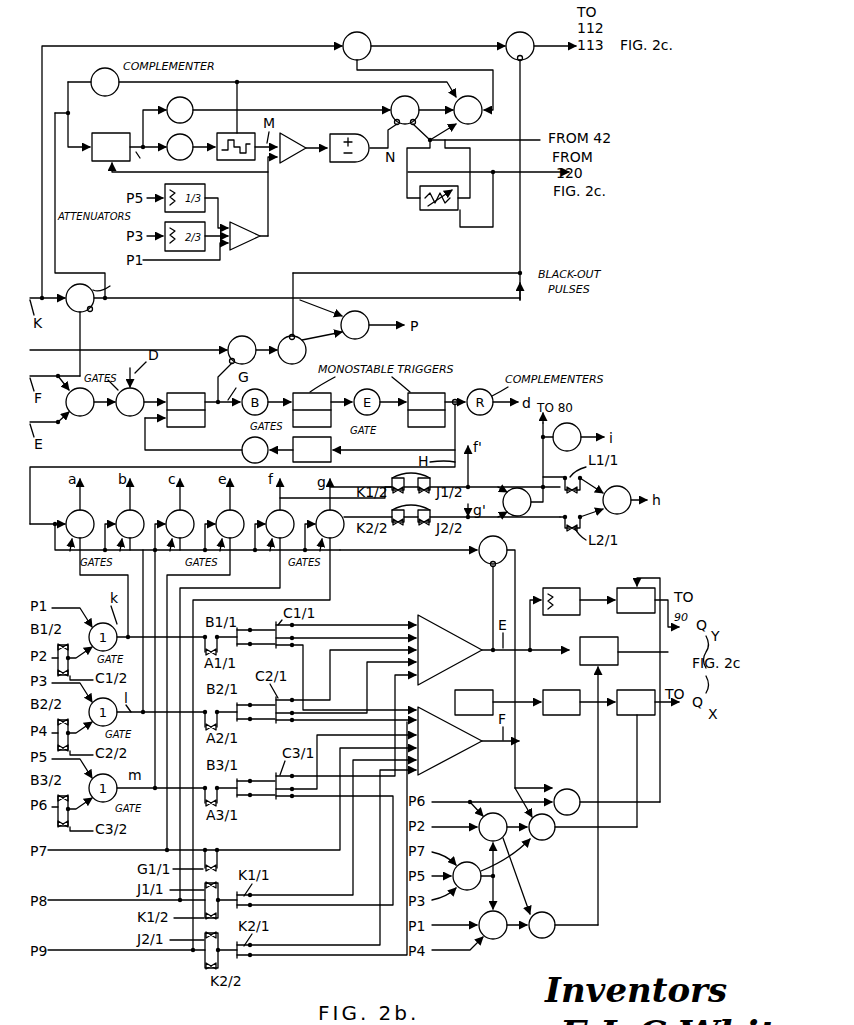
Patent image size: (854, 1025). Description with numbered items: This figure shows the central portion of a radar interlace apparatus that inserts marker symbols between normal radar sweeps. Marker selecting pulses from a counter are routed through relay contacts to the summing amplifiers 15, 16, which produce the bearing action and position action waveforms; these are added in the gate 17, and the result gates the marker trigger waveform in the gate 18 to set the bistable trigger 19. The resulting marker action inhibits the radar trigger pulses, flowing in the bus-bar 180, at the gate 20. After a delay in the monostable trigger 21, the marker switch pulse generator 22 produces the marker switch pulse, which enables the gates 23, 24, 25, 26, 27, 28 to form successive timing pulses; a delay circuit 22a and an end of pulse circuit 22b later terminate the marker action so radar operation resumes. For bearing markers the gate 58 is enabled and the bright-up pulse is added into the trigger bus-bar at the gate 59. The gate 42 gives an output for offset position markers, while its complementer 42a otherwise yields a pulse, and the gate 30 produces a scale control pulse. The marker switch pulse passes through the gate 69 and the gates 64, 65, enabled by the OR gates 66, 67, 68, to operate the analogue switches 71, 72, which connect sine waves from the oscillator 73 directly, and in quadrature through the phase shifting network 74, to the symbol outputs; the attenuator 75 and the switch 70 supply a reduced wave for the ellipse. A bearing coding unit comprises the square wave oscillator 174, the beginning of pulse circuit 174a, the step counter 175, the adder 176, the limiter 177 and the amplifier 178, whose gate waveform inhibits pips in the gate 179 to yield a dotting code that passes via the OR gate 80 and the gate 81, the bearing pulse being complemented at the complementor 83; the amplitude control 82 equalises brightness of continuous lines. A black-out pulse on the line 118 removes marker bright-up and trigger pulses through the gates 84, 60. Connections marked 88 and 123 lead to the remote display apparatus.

The complementor 83 is at (108, 68).
The gate 81 is at (373, 37).
The gate 84 is at (532, 40).
The gate 179 is at (405, 96).
The OR gate 80 is at (470, 96).
The square wave oscillator 174 is at (120, 143).
The beginning of pulse circuit 174a is at (183, 123).
The step counter 175 is at (243, 131).
The adder 176 is at (295, 131).
The limiter 177 is at (342, 131).
The amplifier 178 is at (236, 228).
The amplitude control 82 is at (418, 203).
The line 118 is at (537, 294).
The gate 58 is at (103, 297).
The bus-bar 180 is at (94, 351).
The gate 20 is at (242, 341).
The gate 60 is at (313, 341).
The gate 59 is at (355, 315).
The gate 17 is at (77, 417).
The gate 18 is at (124, 417).
The bistable trigger 19 is at (176, 414).
The monostable trigger 21 is at (312, 399).
The marker switch pulse generator 22 is at (426, 399).
The delay circuit 22a is at (333, 449).
The end of pulse circuit 22b is at (242, 445).
The gate 42 is at (519, 488).
The complementer 42a is at (578, 428).
The gate 30 is at (632, 507).
The gate 23 is at (67, 514).
The gate 24 is at (117, 514).
The gate 25 is at (167, 514).
The gate 26 is at (217, 514).
The gate 27 is at (267, 514).
The gate 28 is at (342, 538).
The gate 69 is at (481, 557).
The summing amplifier 15 is at (450, 642).
The summing amplifier 16 is at (450, 751).
The oscillator 73 is at (474, 693).
The phase shifting network 74 is at (563, 715).
The attenuator 75 is at (584, 574).
The switch 70 is at (636, 600).
The analogue switch 71 is at (605, 643).
The analogue switch 72 is at (636, 702).
The connection to 88 of FIG. 2c 88 is at (683, 639).
The connection to 123 of FIG. 2c 123 is at (679, 719).
The OR gate 67 is at (493, 812).
The OR gate 66 is at (467, 866).
The OR gate 68 is at (493, 940).
The gate 64 is at (567, 816).
The gate 65 is at (536, 885).